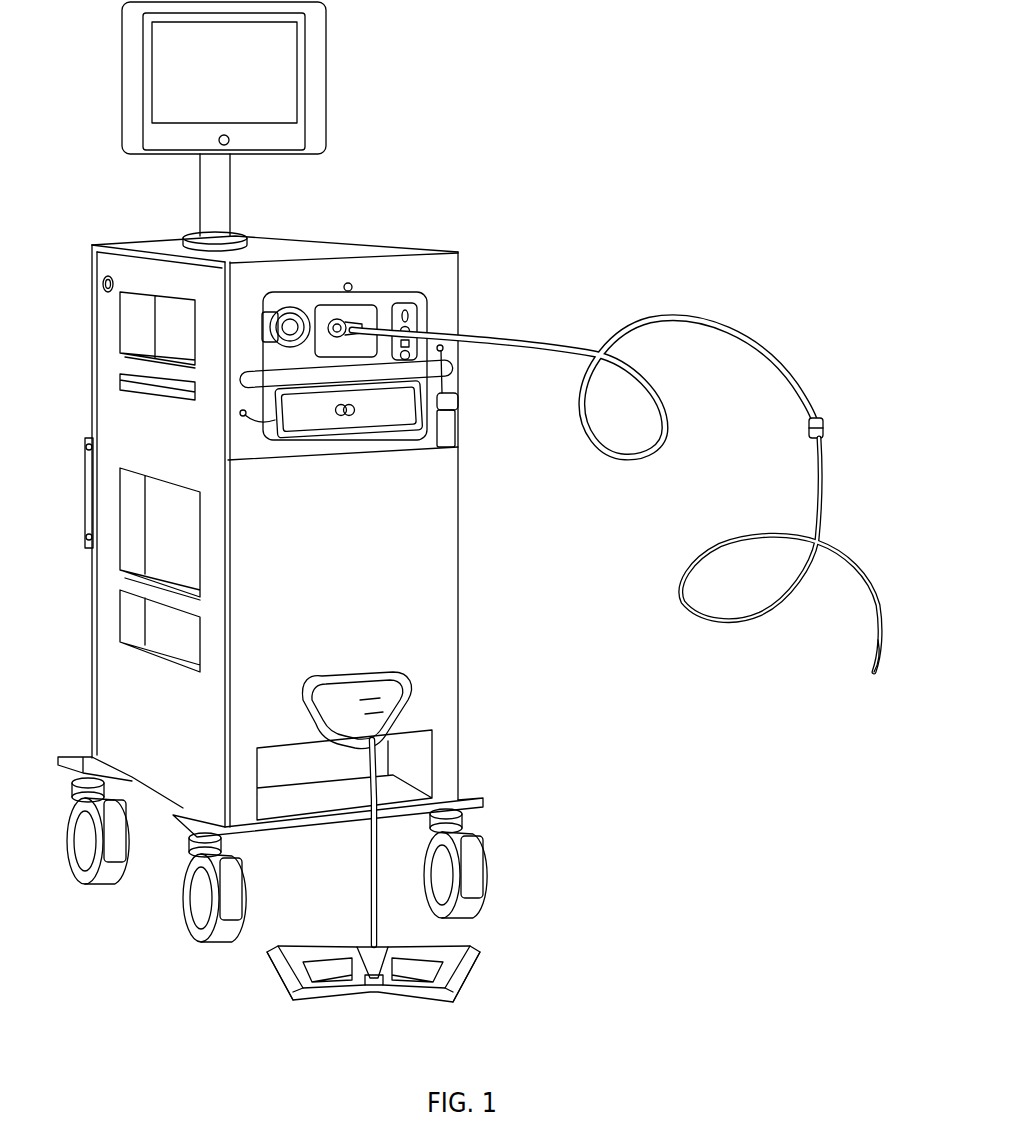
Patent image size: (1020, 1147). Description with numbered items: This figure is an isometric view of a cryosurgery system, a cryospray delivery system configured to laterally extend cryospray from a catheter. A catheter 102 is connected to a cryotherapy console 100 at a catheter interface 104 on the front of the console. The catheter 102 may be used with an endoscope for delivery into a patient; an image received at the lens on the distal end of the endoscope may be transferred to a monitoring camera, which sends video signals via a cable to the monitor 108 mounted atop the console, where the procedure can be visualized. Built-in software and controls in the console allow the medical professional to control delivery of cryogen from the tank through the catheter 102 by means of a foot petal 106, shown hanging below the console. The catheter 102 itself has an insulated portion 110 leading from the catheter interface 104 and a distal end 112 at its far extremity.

The cryotherapy console 100 is at (118, 244).
The catheter 102 is at (826, 492).
The catheter interface 104 is at (350, 328).
The foot petal 106 is at (338, 997).
The monitor 108 is at (122, 86).
The insulated portion 110 is at (543, 333).
The distal end 112 is at (872, 667).